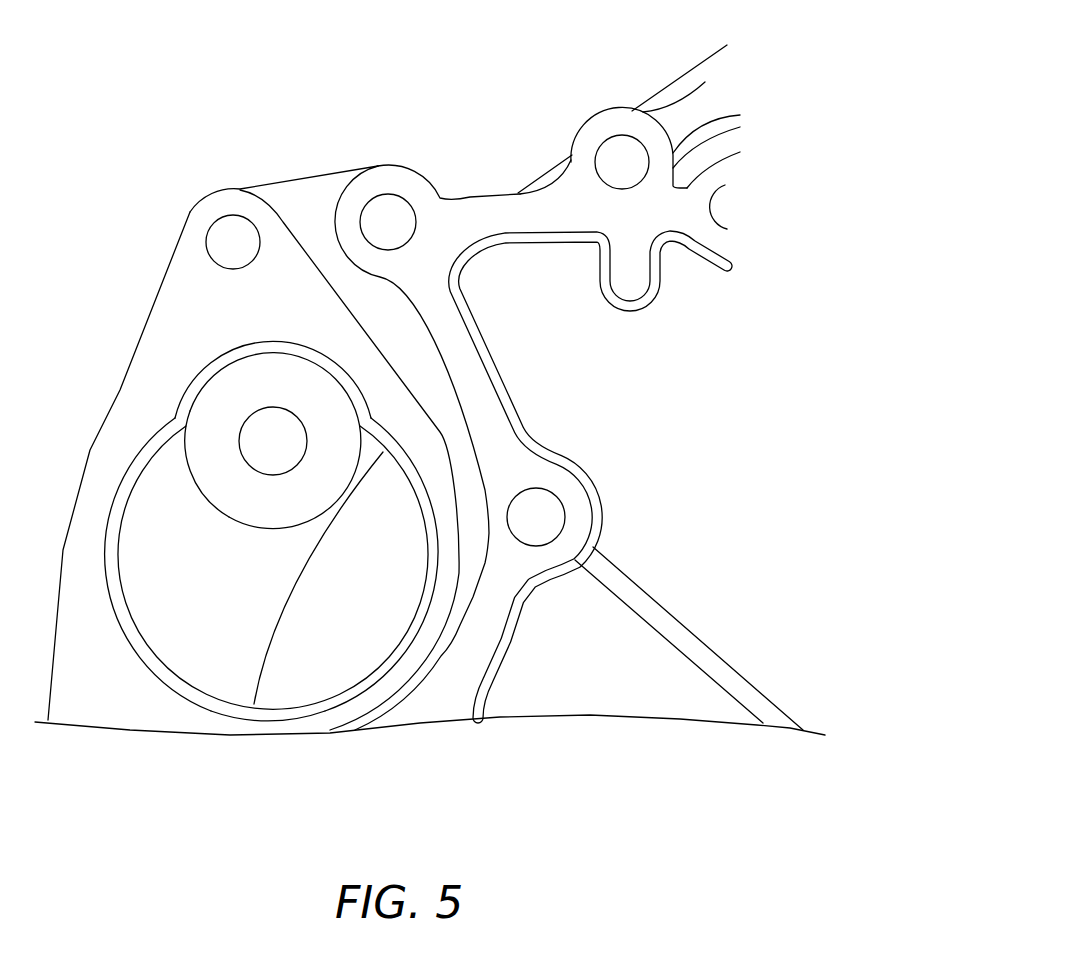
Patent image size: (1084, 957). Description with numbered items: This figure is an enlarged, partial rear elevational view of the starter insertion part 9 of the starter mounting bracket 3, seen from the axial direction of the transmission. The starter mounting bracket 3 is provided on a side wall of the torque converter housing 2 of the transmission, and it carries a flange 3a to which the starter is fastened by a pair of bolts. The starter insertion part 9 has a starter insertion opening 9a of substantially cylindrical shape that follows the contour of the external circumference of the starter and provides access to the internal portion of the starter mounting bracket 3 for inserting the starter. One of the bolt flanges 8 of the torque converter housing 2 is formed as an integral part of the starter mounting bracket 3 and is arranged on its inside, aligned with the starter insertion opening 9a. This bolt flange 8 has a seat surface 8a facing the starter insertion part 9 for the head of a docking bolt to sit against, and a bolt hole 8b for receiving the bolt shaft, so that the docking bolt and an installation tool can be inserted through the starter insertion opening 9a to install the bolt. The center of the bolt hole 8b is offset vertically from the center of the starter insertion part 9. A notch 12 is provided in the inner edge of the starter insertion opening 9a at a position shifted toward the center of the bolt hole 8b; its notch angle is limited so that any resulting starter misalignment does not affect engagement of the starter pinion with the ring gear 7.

The torque converter housing 2 is at (541, 170).
The starter mounting bracket 3 is at (145, 311).
The flange 3a is at (128, 394).
The ring gear 7 is at (302, 623).
The bolt flange 8 is at (228, 513).
The seat surface 8a is at (208, 475).
The bolt hole 8b is at (289, 416).
The starter insertion part 9 is at (194, 660).
The starter insertion opening 9a is at (307, 712).
The notch 12 is at (232, 366).